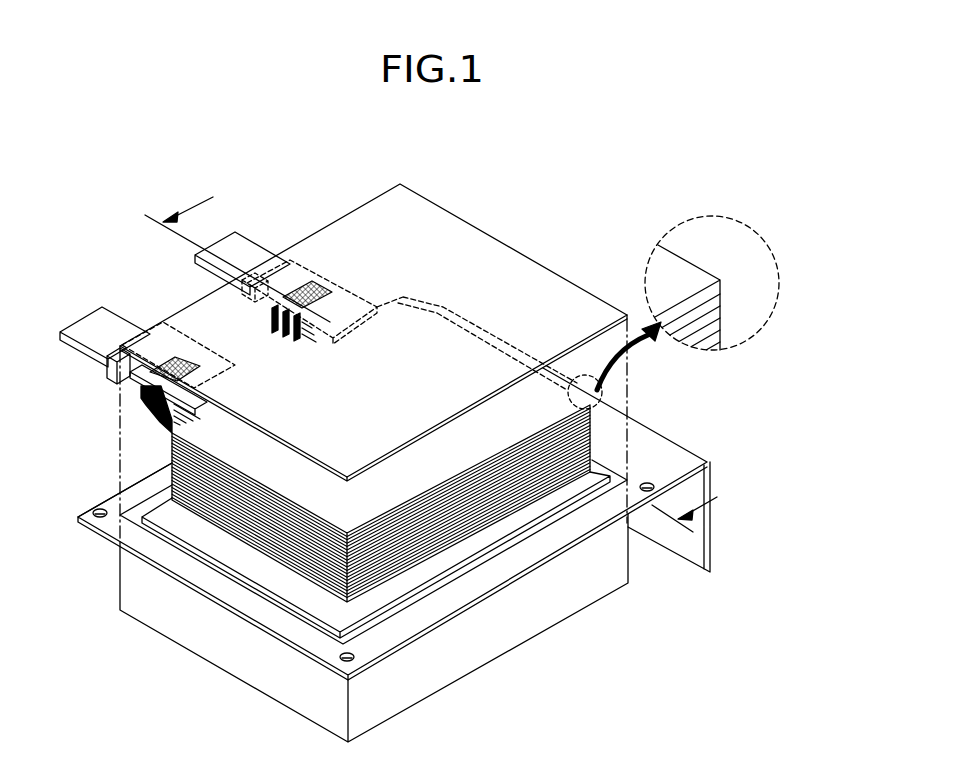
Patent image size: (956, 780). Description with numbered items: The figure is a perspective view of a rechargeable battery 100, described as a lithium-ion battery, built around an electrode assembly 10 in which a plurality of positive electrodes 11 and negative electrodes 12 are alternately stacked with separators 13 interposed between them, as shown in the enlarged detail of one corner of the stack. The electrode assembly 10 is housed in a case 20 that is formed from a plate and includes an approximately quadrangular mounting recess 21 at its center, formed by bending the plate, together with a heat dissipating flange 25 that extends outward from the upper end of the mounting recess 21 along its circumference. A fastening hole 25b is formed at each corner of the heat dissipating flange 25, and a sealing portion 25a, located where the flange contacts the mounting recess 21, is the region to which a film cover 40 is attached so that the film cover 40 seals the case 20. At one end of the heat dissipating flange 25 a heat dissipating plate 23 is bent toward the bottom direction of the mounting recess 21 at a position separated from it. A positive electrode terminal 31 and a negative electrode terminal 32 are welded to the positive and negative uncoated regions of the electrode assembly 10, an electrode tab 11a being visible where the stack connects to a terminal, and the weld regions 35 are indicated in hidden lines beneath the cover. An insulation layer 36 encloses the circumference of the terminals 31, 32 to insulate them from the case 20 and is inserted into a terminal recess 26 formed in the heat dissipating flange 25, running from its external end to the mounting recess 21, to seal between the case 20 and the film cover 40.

The rechargeable battery 100 is at (284, 136).
The electrode assembly 10 is at (333, 409).
The positive electrode 11 is at (722, 300).
The electrode tab 11a is at (148, 407).
The negative electrode 12 is at (723, 325).
The separator 13 is at (725, 282).
The case 20 is at (413, 555).
The mounting recess 21 is at (183, 520).
The heat dissipating plate 23 is at (711, 541).
The heat dissipating flange 25 is at (378, 555).
The sealing portion 25a is at (227, 570).
The fastening hole 25b is at (98, 515).
The terminal recess 26 is at (167, 470).
The positive electrode terminal 31 is at (112, 320).
The negative electrode terminal 32 is at (238, 247).
The weld portion 35 is at (183, 367).
The insulation layer 36 is at (112, 378).
The film cover 40 is at (430, 225).